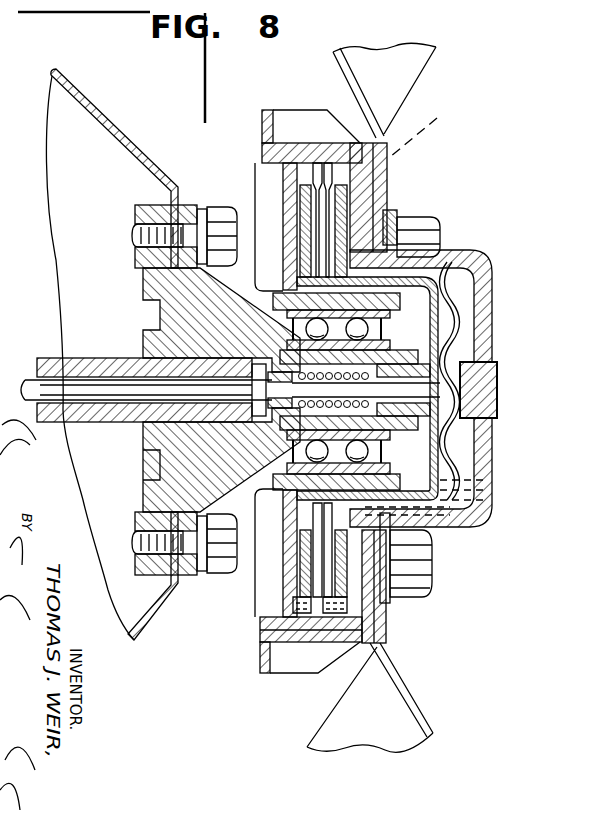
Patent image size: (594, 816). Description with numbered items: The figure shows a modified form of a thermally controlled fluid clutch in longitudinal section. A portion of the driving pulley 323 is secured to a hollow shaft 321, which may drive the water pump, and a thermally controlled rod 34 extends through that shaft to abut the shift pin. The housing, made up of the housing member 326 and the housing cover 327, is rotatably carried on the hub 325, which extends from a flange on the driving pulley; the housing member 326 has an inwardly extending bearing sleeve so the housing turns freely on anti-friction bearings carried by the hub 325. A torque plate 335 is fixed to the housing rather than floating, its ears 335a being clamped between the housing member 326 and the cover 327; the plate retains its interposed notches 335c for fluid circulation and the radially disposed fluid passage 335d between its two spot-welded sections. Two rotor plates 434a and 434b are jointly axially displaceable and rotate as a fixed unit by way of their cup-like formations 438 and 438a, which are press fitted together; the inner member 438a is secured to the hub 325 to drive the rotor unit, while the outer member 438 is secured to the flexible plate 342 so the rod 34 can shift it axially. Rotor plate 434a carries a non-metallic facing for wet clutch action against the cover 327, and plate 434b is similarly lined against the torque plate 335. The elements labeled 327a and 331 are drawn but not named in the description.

The portion of the driving pulley 323 is at (128, 137).
The hollow shaft 321 is at (95, 358).
The thermally controlled rod 34 is at (117, 392).
The housing member 326 is at (290, 272).
The housing cover 327 is at (392, 178).
The drum surface 327a is at (439, 122).
The pulley flange 331 is at (413, 64).
The torque plate 335 is at (303, 213).
The driving lugs (ears) 335a is at (306, 205).
The interposed notches 335c is at (268, 160).
The radially disposed fluid passage 335d is at (306, 233).
The rotor plate 434a is at (419, 235).
The rotor plate 434b is at (312, 230).
The outer cup-like member 438 is at (483, 263).
The inner cup-like member 438a is at (440, 287).
The flexible plate 342 is at (458, 340).
The hub 325 is at (480, 360).